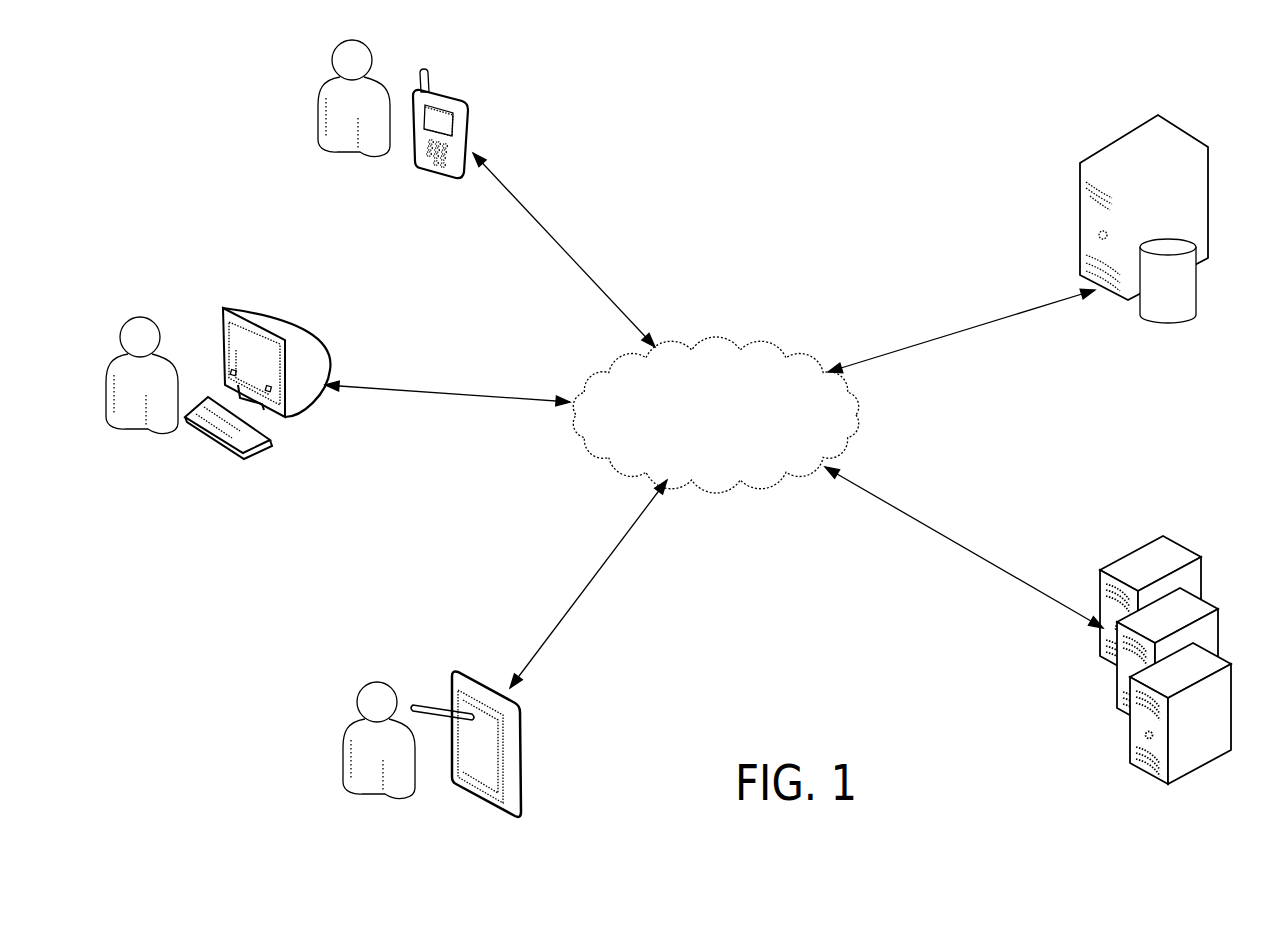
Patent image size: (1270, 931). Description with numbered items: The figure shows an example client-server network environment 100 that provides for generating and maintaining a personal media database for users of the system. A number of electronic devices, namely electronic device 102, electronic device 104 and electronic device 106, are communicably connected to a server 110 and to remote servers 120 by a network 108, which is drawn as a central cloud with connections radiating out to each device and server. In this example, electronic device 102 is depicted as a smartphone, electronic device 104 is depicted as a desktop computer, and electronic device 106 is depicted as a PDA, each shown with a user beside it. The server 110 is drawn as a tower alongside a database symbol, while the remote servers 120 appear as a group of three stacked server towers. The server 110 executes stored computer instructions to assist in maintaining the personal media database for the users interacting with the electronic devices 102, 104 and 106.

The network environment 100 is at (838, 88).
The electronic device 102 is at (455, 92).
The electronic device 104 is at (300, 320).
The electronic device 106 is at (465, 665).
The network 108 is at (727, 346).
The server 110 is at (1085, 318).
The remote servers 120 is at (1100, 746).